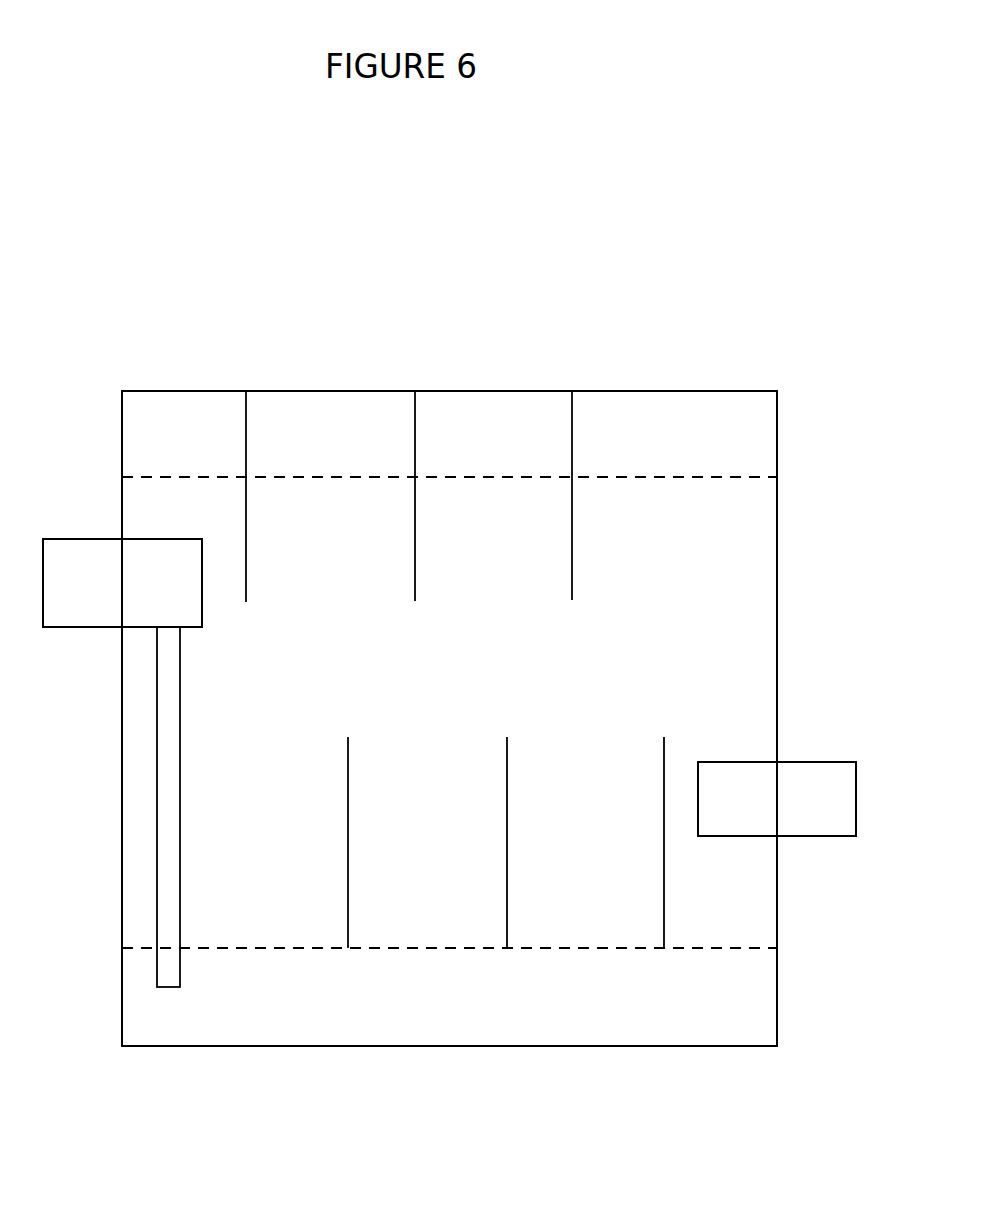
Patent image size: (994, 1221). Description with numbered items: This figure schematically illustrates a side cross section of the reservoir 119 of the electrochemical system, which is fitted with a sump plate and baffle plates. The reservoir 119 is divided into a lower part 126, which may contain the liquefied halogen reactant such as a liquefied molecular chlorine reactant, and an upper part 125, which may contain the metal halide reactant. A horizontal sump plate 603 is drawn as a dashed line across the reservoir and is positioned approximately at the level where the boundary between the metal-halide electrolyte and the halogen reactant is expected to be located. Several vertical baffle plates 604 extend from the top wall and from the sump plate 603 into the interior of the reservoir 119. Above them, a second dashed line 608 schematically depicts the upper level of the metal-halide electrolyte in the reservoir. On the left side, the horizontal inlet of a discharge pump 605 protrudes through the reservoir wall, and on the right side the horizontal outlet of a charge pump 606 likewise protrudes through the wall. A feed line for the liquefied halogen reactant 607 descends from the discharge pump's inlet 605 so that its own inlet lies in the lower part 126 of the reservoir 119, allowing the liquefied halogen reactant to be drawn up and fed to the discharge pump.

The reservoir 119 is at (482, 1157).
The upper part 125 is at (730, 561).
The lower part 126 is at (530, 1020).
The horizontal sump plate 603 is at (461, 955).
The vertical baffle plates 604 is at (246, 524).
The horizontal inlet of a discharge pump 605 is at (122, 583).
The horizontal outlet of a charge pump 606 is at (812, 836).
The feed line for the liquefied halogen reactant 607 is at (180, 841).
The upper level of the metal-halide electrolyte 608 is at (522, 475).